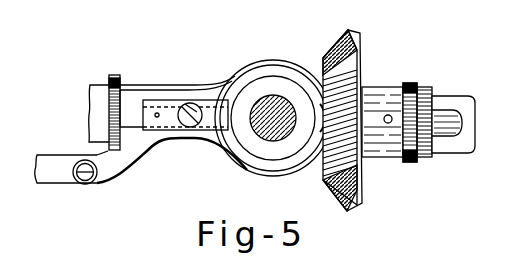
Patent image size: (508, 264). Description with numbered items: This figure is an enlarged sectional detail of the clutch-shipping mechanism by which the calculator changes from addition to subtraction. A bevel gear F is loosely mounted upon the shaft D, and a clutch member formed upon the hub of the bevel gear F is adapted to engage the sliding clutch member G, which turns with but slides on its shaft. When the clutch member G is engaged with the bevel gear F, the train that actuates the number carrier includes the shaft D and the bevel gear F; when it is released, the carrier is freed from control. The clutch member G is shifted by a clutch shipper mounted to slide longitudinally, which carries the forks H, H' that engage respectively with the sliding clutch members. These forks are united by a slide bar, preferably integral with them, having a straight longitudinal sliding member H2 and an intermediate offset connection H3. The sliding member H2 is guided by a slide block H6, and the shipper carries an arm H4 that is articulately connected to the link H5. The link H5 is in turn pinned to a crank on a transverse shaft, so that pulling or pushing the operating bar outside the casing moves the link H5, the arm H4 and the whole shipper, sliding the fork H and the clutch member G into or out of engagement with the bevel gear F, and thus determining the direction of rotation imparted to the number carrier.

The fork H' is at (116, 92).
The straight longitudinal sliding member H2 is at (133, 102).
The intermediate offset connection H3 is at (258, 60).
The arm H4 is at (130, 162).
The link H5 is at (60, 177).
The slide block H6 is at (165, 118).
The bevel gear F is at (363, 50).
The sliding clutch member G is at (395, 158).
The fork H is at (422, 105).
The shaft D is at (440, 118).